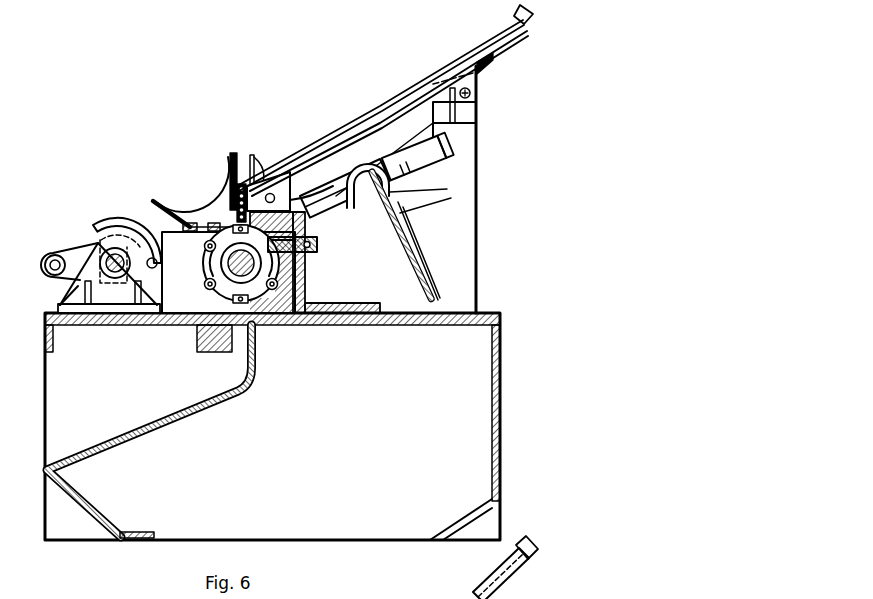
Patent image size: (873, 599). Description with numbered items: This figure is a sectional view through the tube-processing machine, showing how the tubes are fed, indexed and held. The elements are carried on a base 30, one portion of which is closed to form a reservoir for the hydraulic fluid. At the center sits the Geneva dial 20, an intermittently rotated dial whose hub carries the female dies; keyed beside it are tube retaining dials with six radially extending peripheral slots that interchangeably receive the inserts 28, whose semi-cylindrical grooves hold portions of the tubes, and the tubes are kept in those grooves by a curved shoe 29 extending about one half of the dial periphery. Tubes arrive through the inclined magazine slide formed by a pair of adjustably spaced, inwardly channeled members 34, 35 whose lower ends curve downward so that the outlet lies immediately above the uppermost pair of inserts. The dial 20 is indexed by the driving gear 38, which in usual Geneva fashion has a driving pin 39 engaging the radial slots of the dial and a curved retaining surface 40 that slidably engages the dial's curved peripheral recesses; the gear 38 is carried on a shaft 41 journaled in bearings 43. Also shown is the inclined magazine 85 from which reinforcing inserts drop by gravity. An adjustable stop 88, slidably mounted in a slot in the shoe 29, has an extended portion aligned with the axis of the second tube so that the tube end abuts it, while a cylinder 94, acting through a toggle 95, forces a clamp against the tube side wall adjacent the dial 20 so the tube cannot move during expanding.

The Geneva dial 20 is at (207, 207).
The inserts 28 is at (213, 292).
The curved shoe 29 is at (283, 316).
The base 30 is at (453, 327).
The inwardly channeled member 34 is at (527, 577).
The inwardly channeled member 35 is at (530, 32).
The driving gear 38 is at (80, 243).
The driving pin 39 is at (47, 259).
The curved retaining surface 40 is at (130, 225).
The shaft 41 is at (117, 279).
The bearings 43 is at (82, 285).
The inclined magazine 85 is at (487, 70).
The adjustable stop 88 is at (307, 253).
The cylinder 94 is at (372, 211).
The toggle 95 is at (362, 167).